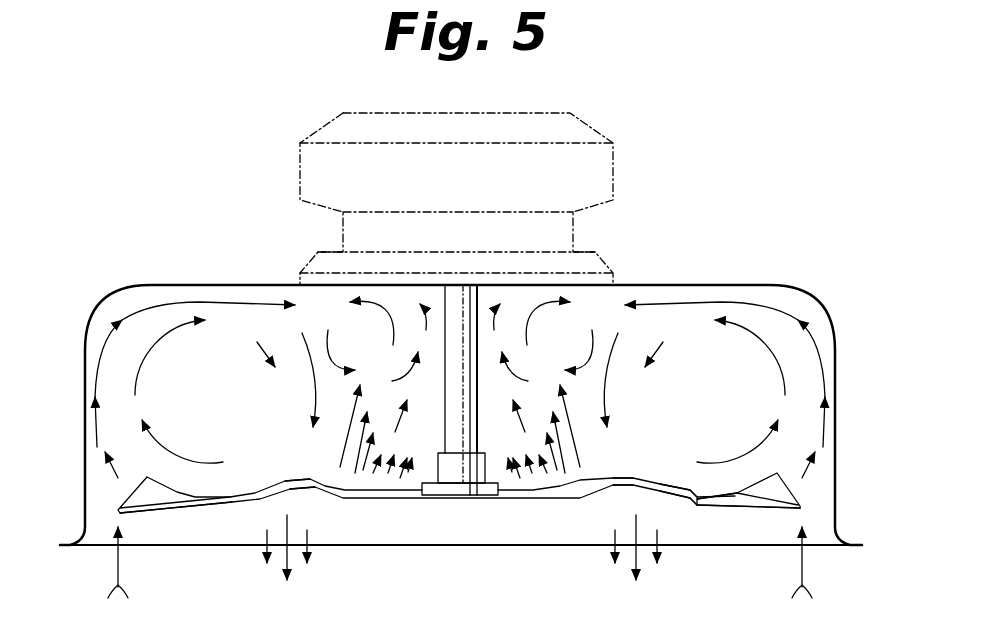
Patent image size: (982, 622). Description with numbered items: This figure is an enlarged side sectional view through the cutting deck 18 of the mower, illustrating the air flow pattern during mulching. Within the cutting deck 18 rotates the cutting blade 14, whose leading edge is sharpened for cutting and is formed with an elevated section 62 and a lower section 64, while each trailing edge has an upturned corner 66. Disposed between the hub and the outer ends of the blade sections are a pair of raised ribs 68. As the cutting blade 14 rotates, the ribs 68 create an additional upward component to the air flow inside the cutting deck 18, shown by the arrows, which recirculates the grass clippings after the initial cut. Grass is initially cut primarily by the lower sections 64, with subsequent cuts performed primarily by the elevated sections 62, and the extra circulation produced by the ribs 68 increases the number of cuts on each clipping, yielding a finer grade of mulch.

The cutting deck 18 is at (733, 285).
The cutting blade 14 is at (393, 505).
The upturned corner 66 is at (140, 487).
The raised ribs 68 is at (302, 477).
The elevated section 62 is at (668, 490).
The lower section 64 is at (752, 508).